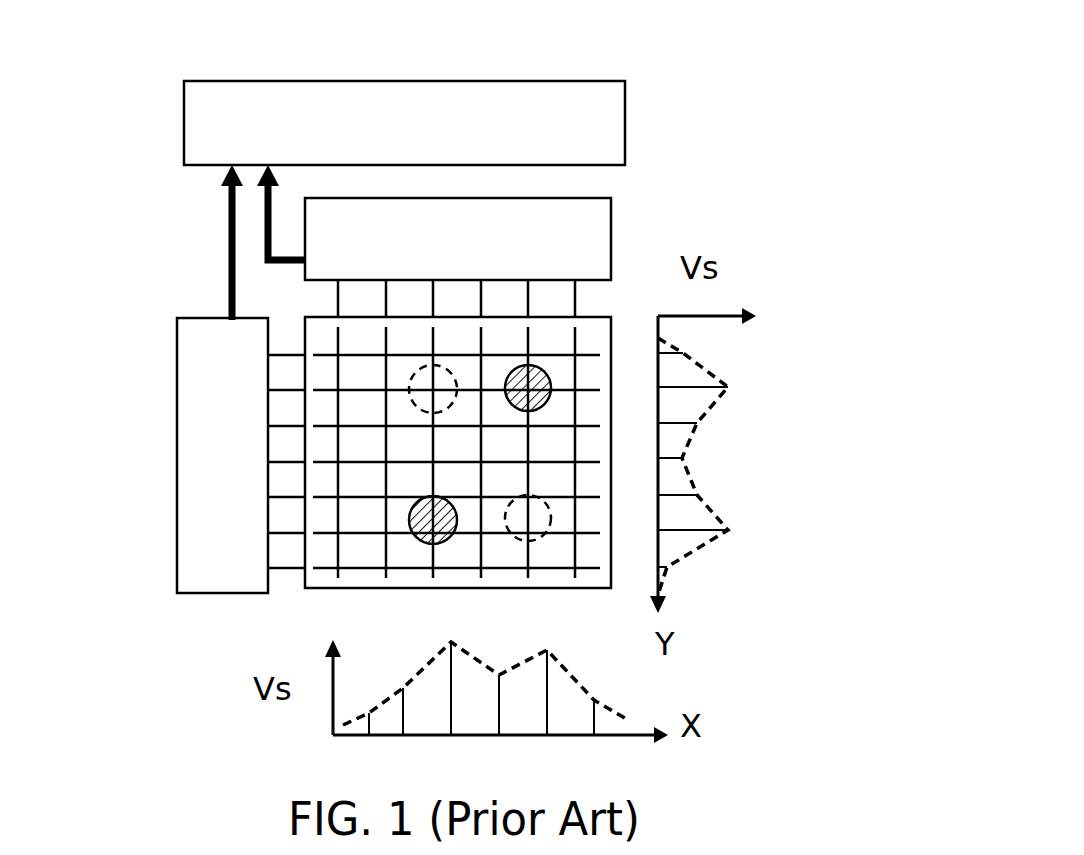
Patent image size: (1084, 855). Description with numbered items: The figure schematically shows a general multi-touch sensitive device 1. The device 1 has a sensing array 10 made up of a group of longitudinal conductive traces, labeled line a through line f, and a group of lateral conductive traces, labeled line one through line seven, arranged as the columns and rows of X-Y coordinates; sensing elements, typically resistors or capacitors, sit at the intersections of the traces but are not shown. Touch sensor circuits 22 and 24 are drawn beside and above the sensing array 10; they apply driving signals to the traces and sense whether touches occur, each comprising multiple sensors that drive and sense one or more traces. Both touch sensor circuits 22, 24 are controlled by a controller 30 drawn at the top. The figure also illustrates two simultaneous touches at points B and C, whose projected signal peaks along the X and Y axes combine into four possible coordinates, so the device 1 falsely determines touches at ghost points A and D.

The multi-touch sensitive device 1 is at (745, 700).
The sensing array 10 is at (590, 589).
The touch sensor circuit 22 is at (178, 505).
The touch sensor circuit 24 is at (611, 222).
The controller 30 is at (388, 80).